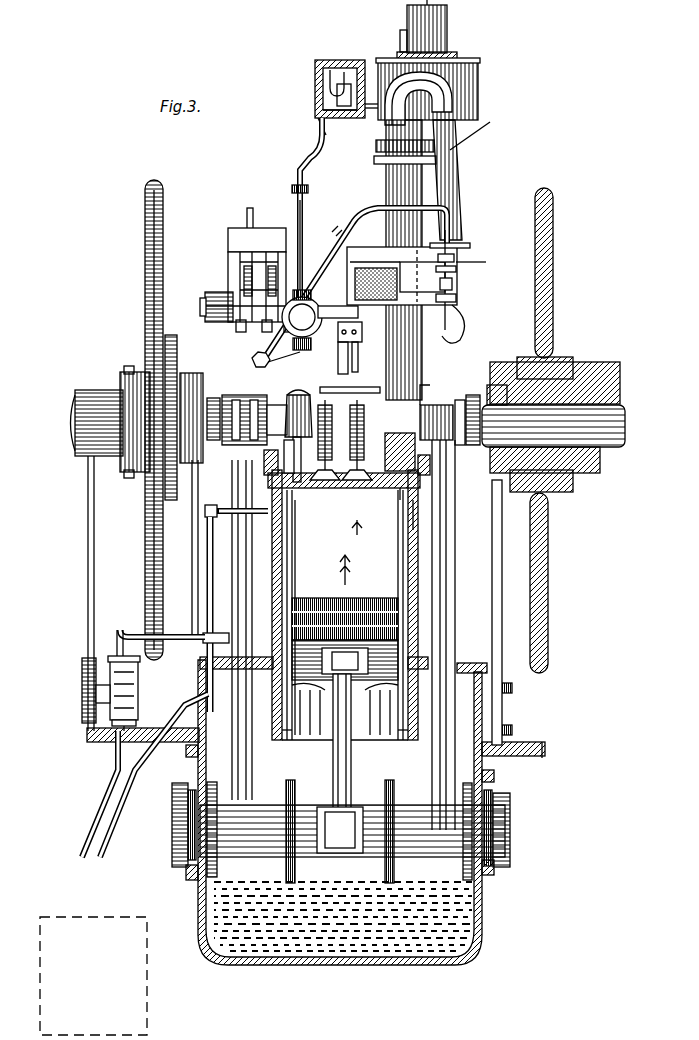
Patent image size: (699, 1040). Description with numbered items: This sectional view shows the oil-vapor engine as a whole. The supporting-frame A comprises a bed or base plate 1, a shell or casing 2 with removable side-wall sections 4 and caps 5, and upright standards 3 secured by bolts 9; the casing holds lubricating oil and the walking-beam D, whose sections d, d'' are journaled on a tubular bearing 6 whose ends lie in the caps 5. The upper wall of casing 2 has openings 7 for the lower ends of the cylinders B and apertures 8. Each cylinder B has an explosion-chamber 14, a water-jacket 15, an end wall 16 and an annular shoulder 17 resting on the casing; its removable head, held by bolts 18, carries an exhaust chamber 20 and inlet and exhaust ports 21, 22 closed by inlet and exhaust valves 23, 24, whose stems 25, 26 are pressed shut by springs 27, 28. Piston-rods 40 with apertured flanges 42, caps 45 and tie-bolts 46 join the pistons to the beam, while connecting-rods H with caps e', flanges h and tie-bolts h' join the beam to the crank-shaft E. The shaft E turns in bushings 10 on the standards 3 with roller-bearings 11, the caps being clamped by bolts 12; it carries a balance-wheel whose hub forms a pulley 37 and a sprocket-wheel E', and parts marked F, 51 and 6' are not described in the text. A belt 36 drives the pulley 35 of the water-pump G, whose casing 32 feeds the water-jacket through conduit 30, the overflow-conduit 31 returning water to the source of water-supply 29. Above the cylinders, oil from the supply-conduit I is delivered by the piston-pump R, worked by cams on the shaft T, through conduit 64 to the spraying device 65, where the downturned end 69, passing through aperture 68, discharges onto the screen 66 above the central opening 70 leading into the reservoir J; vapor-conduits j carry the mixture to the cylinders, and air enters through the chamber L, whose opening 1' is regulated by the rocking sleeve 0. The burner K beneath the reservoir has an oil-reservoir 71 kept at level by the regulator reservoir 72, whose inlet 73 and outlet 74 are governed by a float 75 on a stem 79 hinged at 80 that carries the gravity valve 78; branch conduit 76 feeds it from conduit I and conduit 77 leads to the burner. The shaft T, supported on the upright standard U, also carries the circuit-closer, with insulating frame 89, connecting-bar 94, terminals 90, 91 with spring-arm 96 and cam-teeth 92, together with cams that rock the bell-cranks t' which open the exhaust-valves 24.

The air-admitting opening 1' is at (436, 32).
The rocking valve-sleeve 0 is at (445, 6).
The air-receiving chamber L is at (406, 40).
The reservoir J is at (478, 78).
The hubs or bushings 10 is at (480, 93).
The frame F is at (478, 114).
The vapor-conduits j is at (376, 145).
The oil-burner K is at (455, 172).
The spraying device 65 is at (315, 80).
The downturned end 69 is at (332, 70).
The screen 66 is at (345, 84).
The aperture 68 is at (315, 106).
The central opening 70 is at (318, 118).
The conduit 64 is at (302, 160).
The apertures 8 is at (303, 236).
The branch conduit 76 is at (362, 220).
The supply-conduit I is at (275, 352).
The float 75 is at (402, 276).
The outlet-opening 74 is at (410, 290).
The inlet-opening 73 is at (452, 244).
The valve 78 is at (455, 257).
The hinge 80 is at (481, 263).
The stem or supporting-rod 79 is at (456, 270).
The oil-reservoir 71 is at (452, 284).
The oil-reservoir 72 is at (456, 298).
The conduit 77 is at (456, 322).
The openings 7 is at (250, 216).
The connecting-bar 94 is at (262, 230).
The rocking frame or support 89 is at (228, 243).
The terminal 91 is at (240, 250).
The spring-arm 96 is at (238, 268).
The terminal 90 is at (236, 288).
The shaft T is at (205, 300).
The cam-teeth 92 is at (206, 318).
The piston-pump R is at (302, 290).
The upright standard U is at (350, 348).
The bell-cranks t' is at (355, 367).
The sprocket-wheels E' is at (359, 426).
The clamping-bolts 12 is at (195, 373).
The collar 51 is at (214, 398).
The removable caps e' is at (244, 409).
The exhaust chamber 20 is at (268, 405).
The spring 28 is at (290, 400).
The pulley 37 is at (76, 392).
The crank-shaft E is at (345, 426).
The spring 27 is at (425, 404).
The ring 6' is at (459, 409).
The flanges h is at (345, 635).
The wall 16 is at (232, 481).
The connecting-rods H is at (262, 563).
The tie-bolts h' is at (373, 617).
The cylinders B is at (425, 582).
The removable caps 45 is at (352, 625).
The piston-rods 40 is at (352, 762).
The annular shoulder 17 is at (420, 657).
The inlet port 21 is at (396, 488).
The exhaust port 22 is at (296, 473).
The exhaust-valve 24 is at (324, 488).
The inlet-valve 23 is at (357, 488).
The valve-stem 25 is at (333, 421).
The valve-stem 26 is at (352, 445).
The bolts 18 is at (367, 429).
The roller-bearings 11 is at (364, 520).
The explosion-chamber 14 is at (400, 503).
The water-jacket 15 is at (413, 525).
The shell or casing 2 is at (222, 703).
The supporting-frame A is at (160, 742).
The bed or base plate 1 is at (547, 756).
The removable side-wall sections 4 is at (188, 870).
The bolts 9 is at (512, 728).
The upright standards 3 is at (492, 568).
The walking-beam D is at (290, 868).
The apertured flanges 42 is at (360, 808).
The walking-beam section d'' is at (271, 831).
The walking-beam section d is at (405, 834).
The tie-bolts 46 is at (333, 762).
The tubular bearing 6 is at (346, 825).
The caps 5 is at (186, 845).
The belt 36 is at (88, 571).
The overflow-conduit 31 is at (205, 574).
The conduit 30 is at (117, 651).
The pump G is at (108, 690).
The pulley 35 is at (82, 711).
The outer casing 32 is at (110, 703).
The source of water-supply 29 is at (140, 1010).